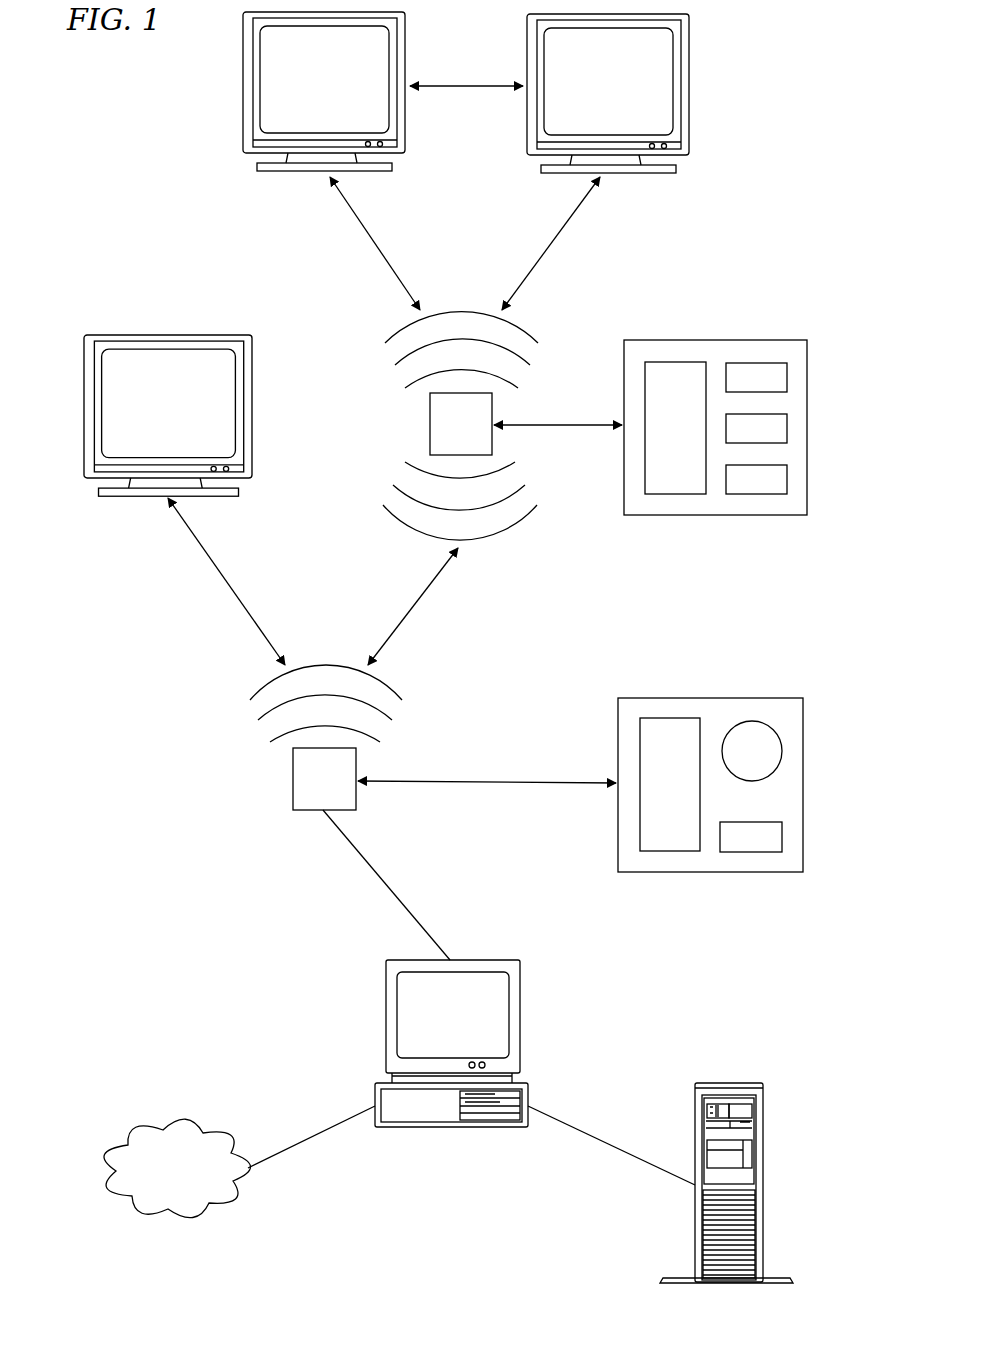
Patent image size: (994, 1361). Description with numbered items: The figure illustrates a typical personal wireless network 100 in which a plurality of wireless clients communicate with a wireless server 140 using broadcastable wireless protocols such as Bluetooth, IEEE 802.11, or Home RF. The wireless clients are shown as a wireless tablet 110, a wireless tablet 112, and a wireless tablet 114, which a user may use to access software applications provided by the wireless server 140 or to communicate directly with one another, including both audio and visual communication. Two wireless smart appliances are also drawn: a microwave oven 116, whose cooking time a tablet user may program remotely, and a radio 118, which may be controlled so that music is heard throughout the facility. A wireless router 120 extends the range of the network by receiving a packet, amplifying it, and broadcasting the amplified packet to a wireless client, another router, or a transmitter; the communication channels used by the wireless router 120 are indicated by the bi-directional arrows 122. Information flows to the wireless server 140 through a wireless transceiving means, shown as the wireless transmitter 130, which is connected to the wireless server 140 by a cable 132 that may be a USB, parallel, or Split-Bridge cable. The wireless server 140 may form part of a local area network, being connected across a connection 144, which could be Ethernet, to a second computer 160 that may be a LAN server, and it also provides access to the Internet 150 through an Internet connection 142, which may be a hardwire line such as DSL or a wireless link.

The personal wireless network 100 is at (170, 94).
The wireless tablet 110 is at (627, 95).
The wireless tablet 112 is at (343, 95).
The wireless tablet 114 is at (188, 417).
The microwave oven 116 is at (716, 340).
The radio 118 is at (710, 872).
The wireless router 120 is at (481, 434).
The bi-directional arrows 122 is at (372, 248).
The wireless transmitter 130 is at (345, 789).
The cable 132 is at (387, 890).
The wireless server 140 is at (473, 1027).
The Internet connection 142 is at (313, 1140).
The connection 144 is at (595, 1140).
The Internet 150 is at (173, 1222).
The second computer 160 is at (763, 1187).